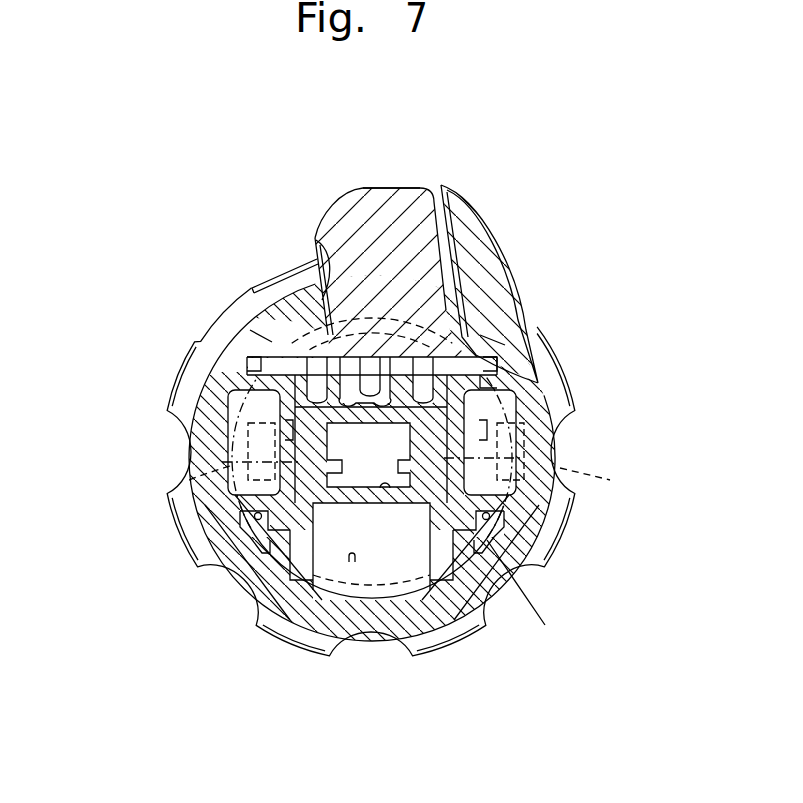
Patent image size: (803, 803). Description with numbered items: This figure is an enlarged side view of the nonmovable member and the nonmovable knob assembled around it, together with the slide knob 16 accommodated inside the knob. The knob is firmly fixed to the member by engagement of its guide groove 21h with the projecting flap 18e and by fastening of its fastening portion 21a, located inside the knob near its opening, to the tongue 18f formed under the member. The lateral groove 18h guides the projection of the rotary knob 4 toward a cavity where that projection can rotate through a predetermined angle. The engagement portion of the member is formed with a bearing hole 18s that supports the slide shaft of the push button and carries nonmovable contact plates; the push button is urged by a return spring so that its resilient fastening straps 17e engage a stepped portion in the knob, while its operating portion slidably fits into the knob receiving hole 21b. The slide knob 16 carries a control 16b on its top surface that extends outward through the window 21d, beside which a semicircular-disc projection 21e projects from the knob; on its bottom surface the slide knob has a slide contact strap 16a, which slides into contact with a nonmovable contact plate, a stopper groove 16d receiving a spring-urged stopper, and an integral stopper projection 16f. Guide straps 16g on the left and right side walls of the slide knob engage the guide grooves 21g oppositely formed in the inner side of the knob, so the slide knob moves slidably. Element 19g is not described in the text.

The rotary knob 4 is at (568, 532).
The slide knob 16 is at (352, 190).
The slide contact strap 16a is at (450, 405).
The control 16b is at (388, 188).
The stopper groove 16d is at (290, 400).
The stopper projection 16f is at (245, 383).
The guide straps 16g is at (485, 376).
The resilient fastening straps 17e is at (555, 452).
The projecting flap 18e is at (252, 520).
The tongue 18f is at (255, 417).
The lateral groove 18h is at (230, 466).
The bearing hole 18s is at (385, 488).
The arm portion 19g is at (276, 360).
The fastening portion 21a is at (515, 470).
The knob receiving hole 21b is at (352, 562).
The window 21d is at (315, 238).
The projection 21e is at (467, 203).
The guide grooves 21g is at (262, 335).
The guide groove 21h is at (233, 512).